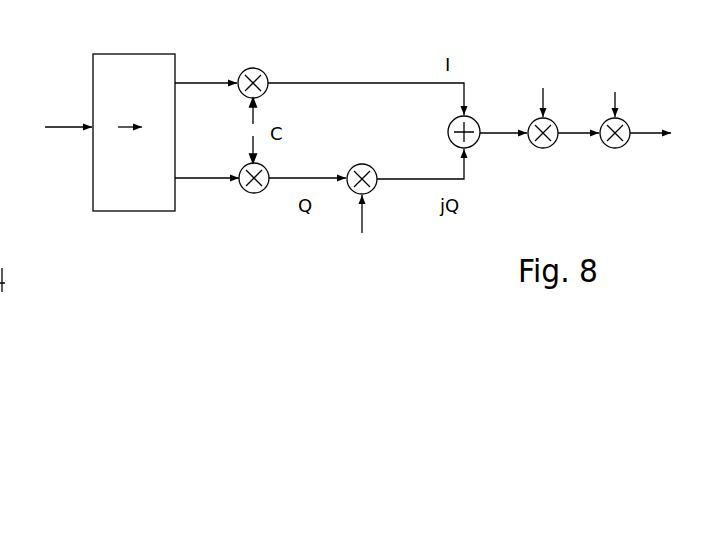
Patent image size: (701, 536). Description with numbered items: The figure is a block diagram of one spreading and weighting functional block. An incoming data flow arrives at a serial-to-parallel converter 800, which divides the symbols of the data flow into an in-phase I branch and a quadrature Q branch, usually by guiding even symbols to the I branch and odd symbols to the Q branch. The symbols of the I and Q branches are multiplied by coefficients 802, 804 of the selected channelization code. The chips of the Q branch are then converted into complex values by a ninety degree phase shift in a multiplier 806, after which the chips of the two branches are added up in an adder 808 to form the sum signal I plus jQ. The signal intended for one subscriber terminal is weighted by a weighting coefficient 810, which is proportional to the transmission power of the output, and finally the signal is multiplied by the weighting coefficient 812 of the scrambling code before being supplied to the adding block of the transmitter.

The serial-to-parallel converter 800 is at (93, 83).
The coefficient of the selected channelization code 802 is at (240, 72).
The coefficient of the selected channelization code 804 is at (241, 168).
The multiplier (Q branch by j) 806 is at (349, 170).
The adder (combining I and jQ) 808 is at (448, 130).
The weighting coefficient 810 is at (528, 125).
The weighting coefficient of the scrambling code 812 is at (600, 125).